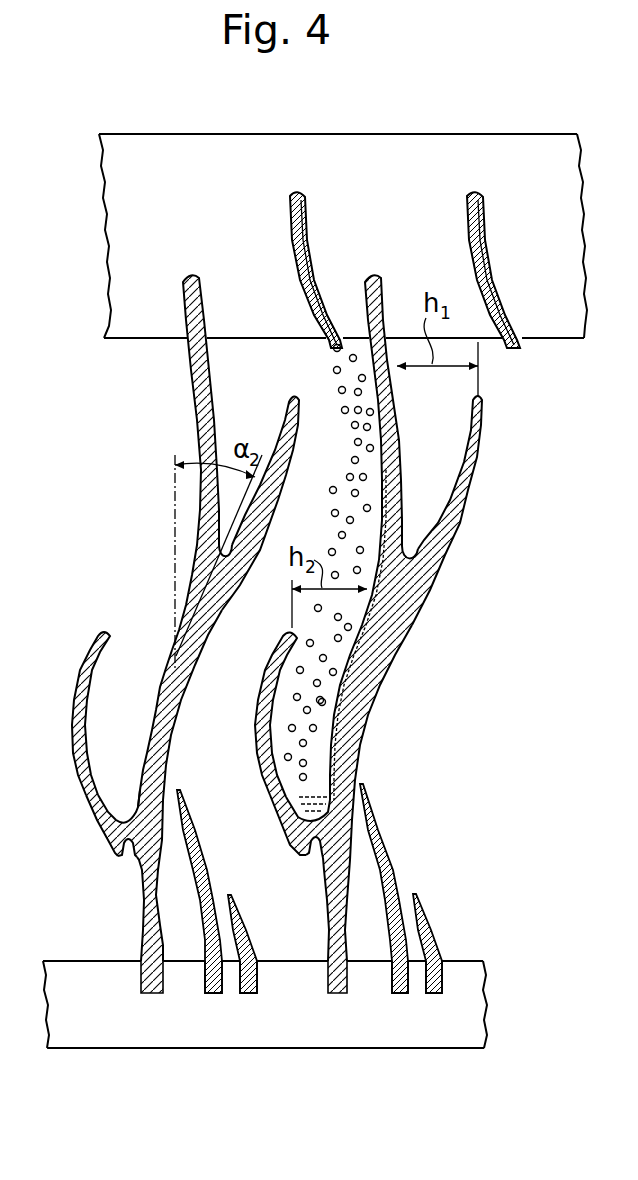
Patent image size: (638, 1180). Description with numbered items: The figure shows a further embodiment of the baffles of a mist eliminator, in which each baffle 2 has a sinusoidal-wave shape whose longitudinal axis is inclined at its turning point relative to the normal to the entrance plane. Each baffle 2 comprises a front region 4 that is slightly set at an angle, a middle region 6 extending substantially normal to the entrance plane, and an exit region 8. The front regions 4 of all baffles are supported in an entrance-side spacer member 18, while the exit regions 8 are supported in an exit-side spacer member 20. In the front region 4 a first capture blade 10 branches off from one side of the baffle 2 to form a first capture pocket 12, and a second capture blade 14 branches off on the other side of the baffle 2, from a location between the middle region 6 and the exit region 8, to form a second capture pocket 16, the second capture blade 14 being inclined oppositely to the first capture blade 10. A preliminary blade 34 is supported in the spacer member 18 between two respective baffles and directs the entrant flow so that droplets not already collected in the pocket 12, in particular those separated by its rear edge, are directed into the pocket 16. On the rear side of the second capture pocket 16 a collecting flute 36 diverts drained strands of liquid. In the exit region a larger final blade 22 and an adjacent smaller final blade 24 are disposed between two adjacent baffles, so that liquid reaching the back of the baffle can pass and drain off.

The baffle 2 is at (176, 583).
The front region 4 is at (193, 360).
The middle region 6 is at (190, 652).
The exit region 8 is at (149, 936).
The first capture blade 10 is at (299, 436).
The first capture pocket 12 is at (228, 538).
The second capture blade 14 is at (92, 660).
The second capture pocket 16 is at (123, 793).
The entrance-side spacer member 18 is at (420, 156).
The exit-side spacer member 20 is at (283, 1022).
The larger final blade 22 is at (204, 874).
The smaller final blade 24 is at (253, 951).
The preliminary blade 34 is at (306, 211).
The collecting flute 36 is at (122, 853).